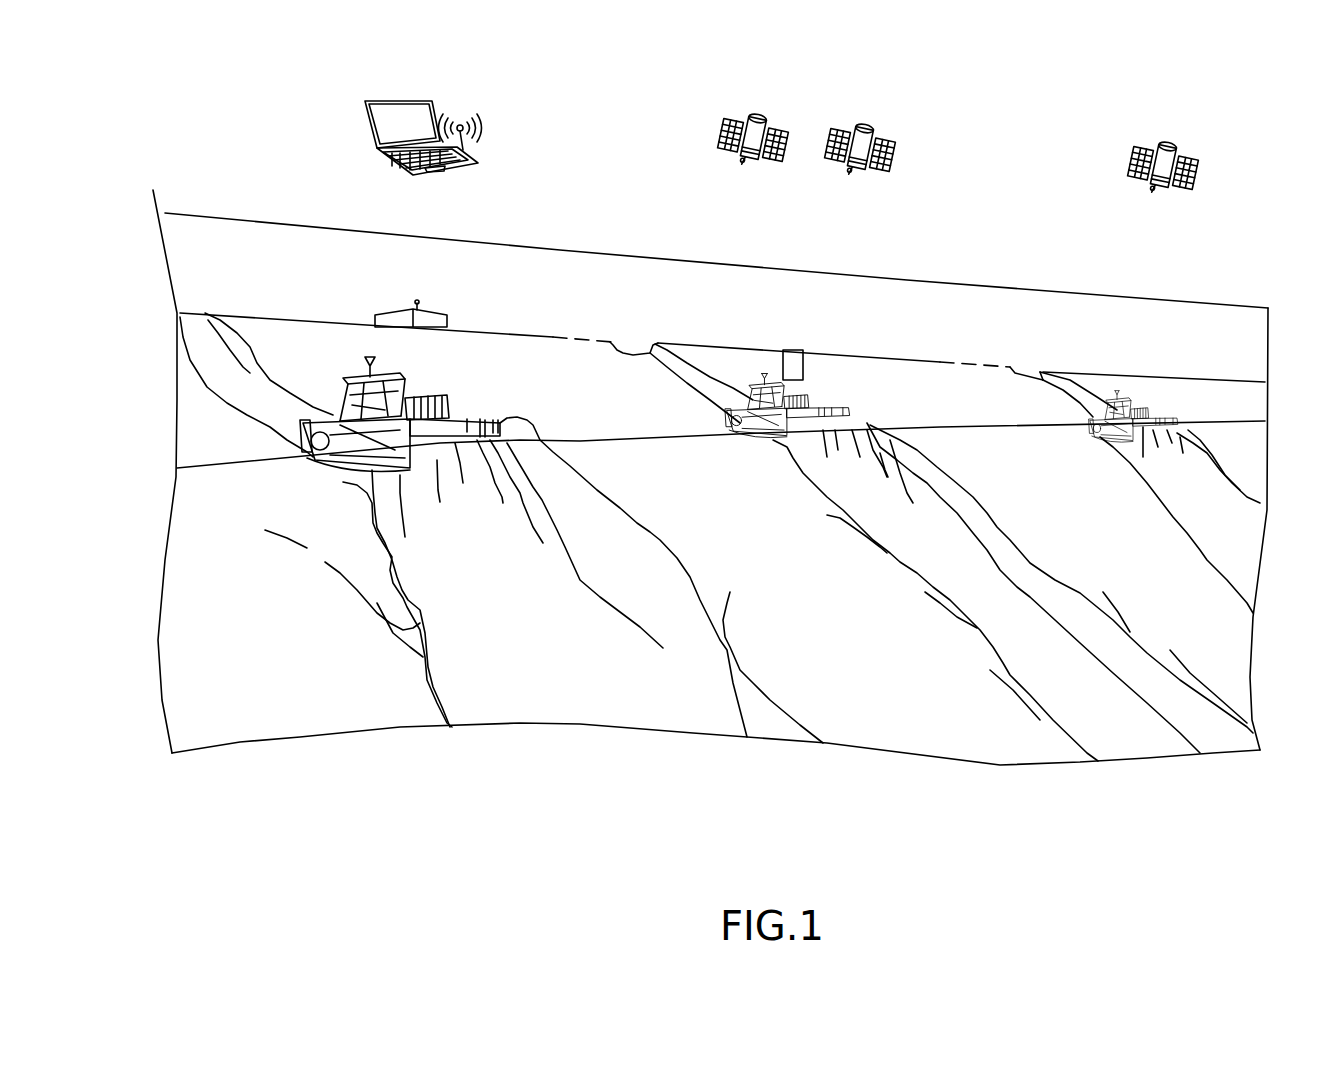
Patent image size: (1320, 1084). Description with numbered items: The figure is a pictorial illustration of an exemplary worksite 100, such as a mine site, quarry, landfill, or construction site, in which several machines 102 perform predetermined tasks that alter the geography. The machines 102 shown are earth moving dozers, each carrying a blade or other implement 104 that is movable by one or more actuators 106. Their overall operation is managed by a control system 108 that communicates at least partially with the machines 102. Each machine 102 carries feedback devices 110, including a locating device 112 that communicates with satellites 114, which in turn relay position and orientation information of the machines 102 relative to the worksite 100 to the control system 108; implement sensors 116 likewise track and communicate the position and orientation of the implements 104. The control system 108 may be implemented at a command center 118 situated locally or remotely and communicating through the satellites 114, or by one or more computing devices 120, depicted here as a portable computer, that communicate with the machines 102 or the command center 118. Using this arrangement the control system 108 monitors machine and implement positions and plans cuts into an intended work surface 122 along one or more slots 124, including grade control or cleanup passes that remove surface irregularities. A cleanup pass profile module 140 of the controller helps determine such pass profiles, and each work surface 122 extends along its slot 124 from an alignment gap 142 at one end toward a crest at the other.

The worksite 100 is at (1064, 238).
The machine 102 is at (313, 462).
The implement 104 is at (512, 424).
The actuator 106 is at (813, 372).
The control system 108 is at (400, 214).
The feedback device 110 is at (760, 358).
The locating device 112 is at (392, 366).
The satellite 114 is at (757, 117).
The implement sensor 116 is at (408, 400).
The command center 118 is at (390, 295).
The computing device 120 is at (408, 196).
The work surface 122 is at (240, 383).
The slot 124 is at (199, 378).
The cleanup pass profile module 140 is at (191, 304).
The alignment gap 142 is at (199, 460).